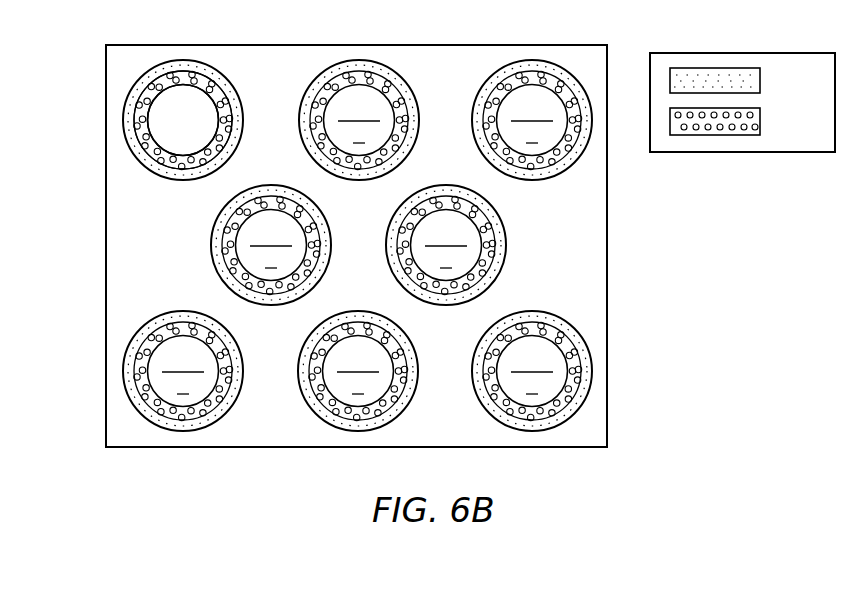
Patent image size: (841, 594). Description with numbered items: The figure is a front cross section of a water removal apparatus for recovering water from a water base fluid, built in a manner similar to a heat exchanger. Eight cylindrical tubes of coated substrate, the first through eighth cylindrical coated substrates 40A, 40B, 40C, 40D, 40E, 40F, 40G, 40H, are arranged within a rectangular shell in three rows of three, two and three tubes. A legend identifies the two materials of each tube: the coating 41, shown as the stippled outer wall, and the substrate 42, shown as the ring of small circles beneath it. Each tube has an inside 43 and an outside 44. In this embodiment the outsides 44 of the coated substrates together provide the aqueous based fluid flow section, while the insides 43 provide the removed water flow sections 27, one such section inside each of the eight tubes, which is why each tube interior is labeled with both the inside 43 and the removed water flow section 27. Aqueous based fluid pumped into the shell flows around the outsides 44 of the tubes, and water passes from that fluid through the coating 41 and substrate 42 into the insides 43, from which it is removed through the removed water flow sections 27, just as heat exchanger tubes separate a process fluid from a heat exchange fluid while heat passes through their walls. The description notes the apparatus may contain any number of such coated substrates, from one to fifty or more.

The first cylindrical coated substrate 40A is at (140, 132).
The second cylindrical coated substrate 40B is at (312, 72).
The third cylindrical coated substrate 40C is at (490, 72).
The fourth cylindrical coated substrate 40D is at (207, 267).
The fifth cylindrical coated substrate 40E is at (507, 278).
The sixth cylindrical coated substrate 40F is at (137, 330).
The seventh cylindrical coated substrate 40G is at (298, 403).
The eighth cylindrical coated substrate 40H is at (485, 417).
The coating 41 is at (738, 80).
The substrate 42 is at (738, 121).
The insides 43 is at (162, 121).
The removed water flow sections 27 is at (177, 143).
The outsides 44 is at (565, 261).